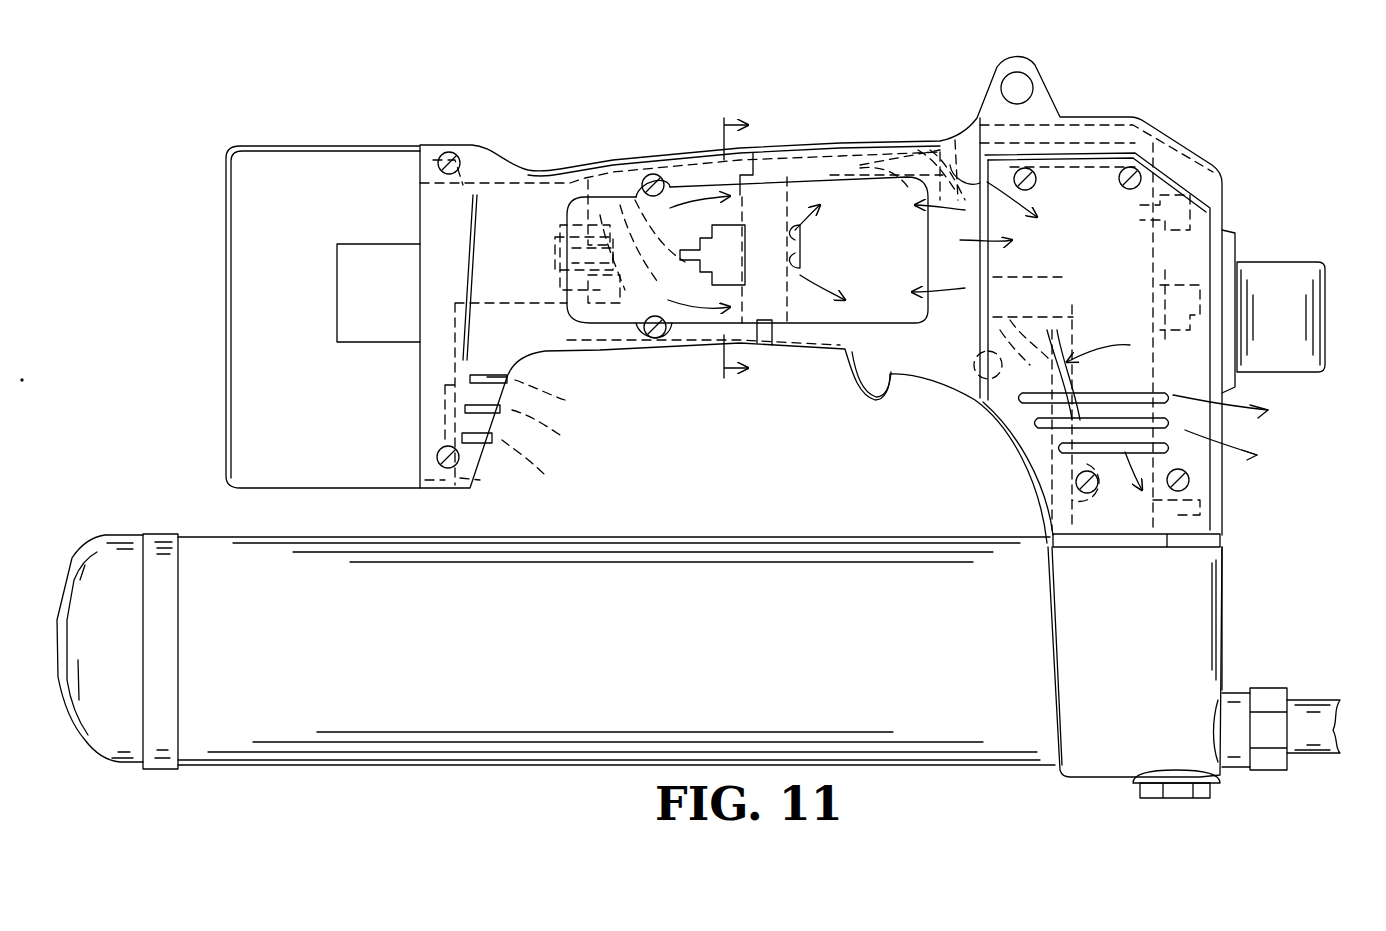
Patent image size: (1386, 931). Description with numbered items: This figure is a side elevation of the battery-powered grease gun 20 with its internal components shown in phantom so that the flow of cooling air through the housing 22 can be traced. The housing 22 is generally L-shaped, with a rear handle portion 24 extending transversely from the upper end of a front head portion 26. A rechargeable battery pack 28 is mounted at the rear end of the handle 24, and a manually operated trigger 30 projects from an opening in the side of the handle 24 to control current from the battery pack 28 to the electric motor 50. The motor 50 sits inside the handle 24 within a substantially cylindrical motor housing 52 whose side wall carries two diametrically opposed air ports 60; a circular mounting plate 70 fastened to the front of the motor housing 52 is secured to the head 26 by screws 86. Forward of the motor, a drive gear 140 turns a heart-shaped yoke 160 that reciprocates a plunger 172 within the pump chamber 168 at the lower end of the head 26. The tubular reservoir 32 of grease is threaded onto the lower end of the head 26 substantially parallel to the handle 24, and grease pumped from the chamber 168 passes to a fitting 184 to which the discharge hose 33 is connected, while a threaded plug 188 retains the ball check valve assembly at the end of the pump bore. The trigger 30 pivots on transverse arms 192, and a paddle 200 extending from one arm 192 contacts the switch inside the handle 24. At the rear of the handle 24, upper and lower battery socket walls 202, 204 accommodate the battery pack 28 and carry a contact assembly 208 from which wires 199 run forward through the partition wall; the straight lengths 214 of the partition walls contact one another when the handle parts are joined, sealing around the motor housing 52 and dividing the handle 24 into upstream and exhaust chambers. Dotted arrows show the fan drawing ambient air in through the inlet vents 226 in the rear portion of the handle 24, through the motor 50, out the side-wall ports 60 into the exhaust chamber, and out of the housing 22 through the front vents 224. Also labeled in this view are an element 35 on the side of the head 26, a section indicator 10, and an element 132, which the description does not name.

The grease gun 20 is at (668, 112).
The housing 22 is at (826, 140).
The rear handle portion 24 is at (617, 155).
The front head portion 26 is at (1227, 602).
The rechargeable battery pack 28 is at (348, 158).
The trigger 30 is at (883, 386).
The tubular reservoir 32 is at (688, 575).
The discharge hose 33 is at (1330, 705).
The fuel cell cover 35 is at (1293, 268).
The electric motor 50 is at (897, 165).
The motor housing 52 is at (873, 180).
The air ports 60 is at (790, 262).
The circular mounting plate 70 is at (953, 140).
The screws 86 is at (963, 183).
The section line 10- 10 is at (717, 246).
The fuel valve 132 is at (1157, 213).
The drive gear 140 is at (1147, 289).
The yoke 160 is at (1153, 272).
The pump chamber 168 is at (1222, 628).
The plunger 172 is at (1190, 505).
The fitting 184 is at (1280, 688).
The threaded plug 188 is at (1205, 798).
The transverse arms 192 is at (974, 362).
The wires 199 is at (680, 255).
The paddle 200 is at (1072, 352).
The upper battery socket wall 202 is at (604, 185).
The lower battery socket wall 204 is at (557, 280).
The contact assembly 208 is at (612, 295).
The straight lengths 214 is at (757, 155).
The air vents 224 is at (1093, 400).
The air vents 226 is at (484, 373).